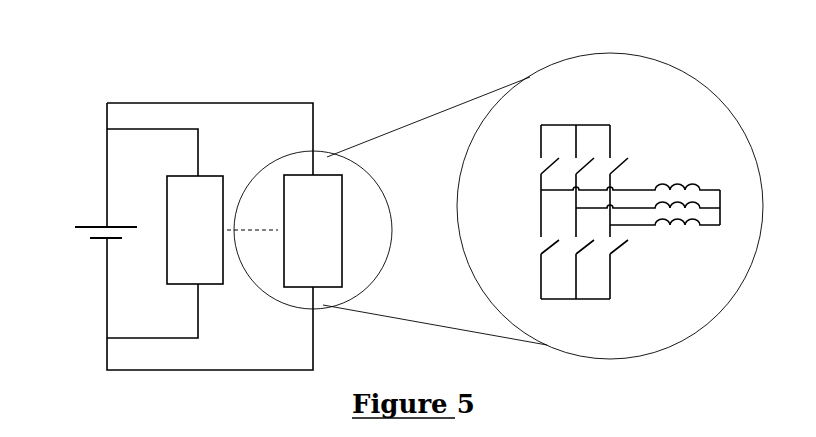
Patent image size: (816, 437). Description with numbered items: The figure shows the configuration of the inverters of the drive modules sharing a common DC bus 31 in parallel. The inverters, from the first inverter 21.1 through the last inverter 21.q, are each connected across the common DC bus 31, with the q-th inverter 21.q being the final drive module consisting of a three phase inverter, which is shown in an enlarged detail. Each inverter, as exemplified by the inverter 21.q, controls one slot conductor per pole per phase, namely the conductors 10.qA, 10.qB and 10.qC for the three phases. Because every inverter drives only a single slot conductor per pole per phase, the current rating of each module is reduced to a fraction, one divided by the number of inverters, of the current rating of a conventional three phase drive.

The common DC bus 31 is at (76, 199).
The inverter 21.1 is at (210, 183).
The inverter 21.q is at (329, 182).
The conductor 10.qA is at (660, 185).
The conductor 10.qB is at (672, 202).
The conductor 10.qC is at (677, 225).